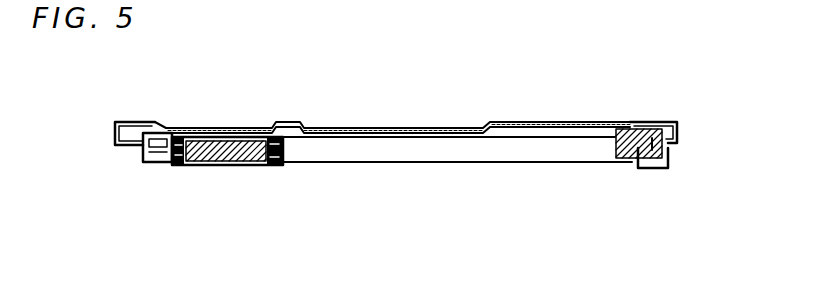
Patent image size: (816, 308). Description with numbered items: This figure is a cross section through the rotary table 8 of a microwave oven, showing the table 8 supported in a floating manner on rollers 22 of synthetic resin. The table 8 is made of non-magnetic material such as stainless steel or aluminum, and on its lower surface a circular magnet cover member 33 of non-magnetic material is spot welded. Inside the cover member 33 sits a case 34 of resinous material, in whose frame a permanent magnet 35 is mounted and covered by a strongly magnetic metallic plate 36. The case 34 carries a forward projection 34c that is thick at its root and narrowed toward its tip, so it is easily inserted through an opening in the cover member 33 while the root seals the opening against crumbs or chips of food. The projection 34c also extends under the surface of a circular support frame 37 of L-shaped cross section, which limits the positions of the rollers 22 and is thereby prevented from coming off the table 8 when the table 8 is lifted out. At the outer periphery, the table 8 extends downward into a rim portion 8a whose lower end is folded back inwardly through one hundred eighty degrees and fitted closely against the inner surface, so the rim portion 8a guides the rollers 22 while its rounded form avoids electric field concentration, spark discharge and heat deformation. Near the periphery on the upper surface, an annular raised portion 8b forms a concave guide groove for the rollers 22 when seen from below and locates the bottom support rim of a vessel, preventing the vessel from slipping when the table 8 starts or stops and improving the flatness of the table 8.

The rotary table 8 is at (523, 121).
The rim portion 8a is at (115, 143).
The annular raised portion 8b is at (138, 121).
The roller 22 is at (652, 168).
The magnet cover member 33 is at (183, 166).
The case 34 is at (273, 165).
The forward projection 34c is at (170, 165).
The permanent magnet 35 is at (228, 163).
The strongly magnetic metallic plate 36 is at (245, 135).
The circular support frame 37 is at (140, 150).